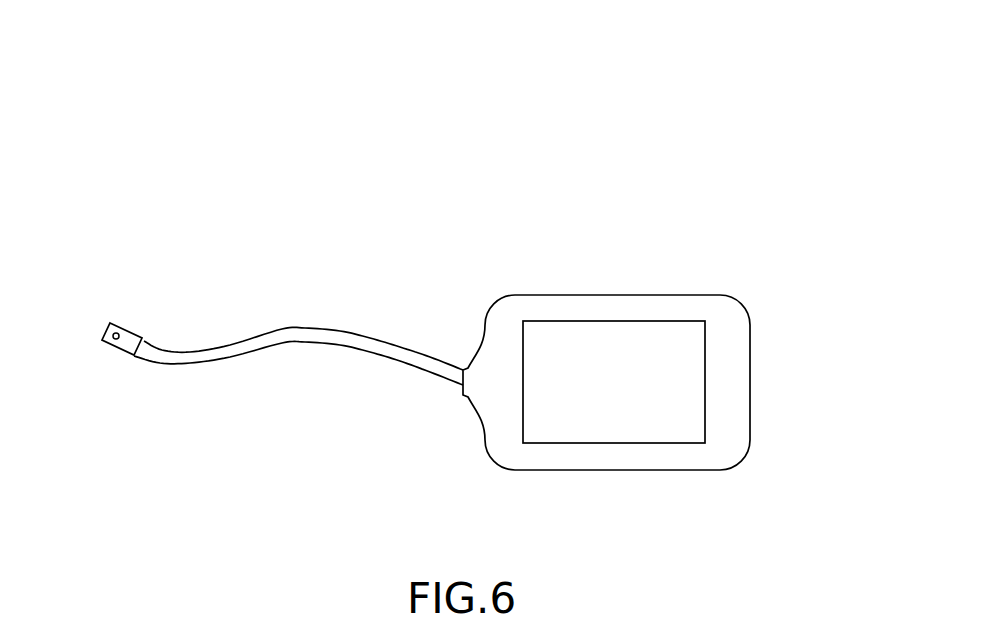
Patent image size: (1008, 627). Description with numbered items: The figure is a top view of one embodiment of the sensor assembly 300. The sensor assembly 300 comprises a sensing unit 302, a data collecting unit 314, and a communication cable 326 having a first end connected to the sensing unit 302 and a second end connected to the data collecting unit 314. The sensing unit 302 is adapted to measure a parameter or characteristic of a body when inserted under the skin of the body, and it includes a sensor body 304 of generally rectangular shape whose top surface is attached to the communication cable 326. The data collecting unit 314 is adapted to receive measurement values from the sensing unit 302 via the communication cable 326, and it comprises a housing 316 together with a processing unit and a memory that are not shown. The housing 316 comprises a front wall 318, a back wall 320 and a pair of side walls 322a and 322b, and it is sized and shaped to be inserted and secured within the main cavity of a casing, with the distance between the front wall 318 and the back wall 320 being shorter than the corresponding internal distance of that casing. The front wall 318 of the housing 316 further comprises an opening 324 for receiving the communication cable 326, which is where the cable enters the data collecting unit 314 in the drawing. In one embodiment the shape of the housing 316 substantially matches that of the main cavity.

The sensor assembly 300 is at (92, 157).
The sensing unit 302 is at (123, 307).
The sensor body 304 is at (135, 328).
The communication cable 326 is at (328, 328).
The opening 324 is at (455, 367).
The front wall 318 is at (473, 412).
The data collecting unit 314 is at (700, 260).
The housing 316 is at (565, 318).
The side wall 322b is at (622, 293).
The side wall 322a is at (608, 472).
The back wall 320 is at (752, 382).